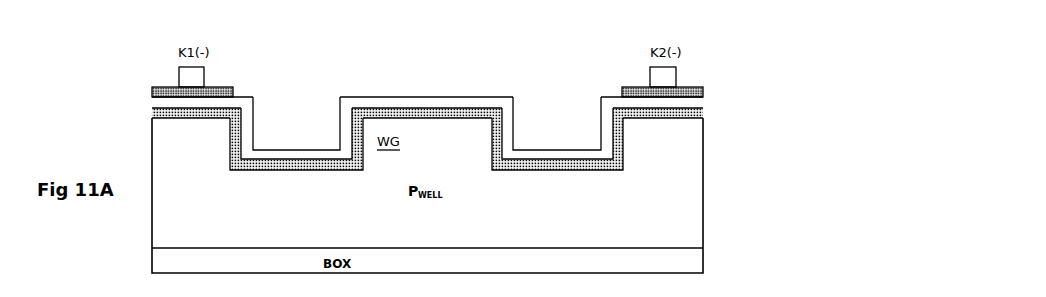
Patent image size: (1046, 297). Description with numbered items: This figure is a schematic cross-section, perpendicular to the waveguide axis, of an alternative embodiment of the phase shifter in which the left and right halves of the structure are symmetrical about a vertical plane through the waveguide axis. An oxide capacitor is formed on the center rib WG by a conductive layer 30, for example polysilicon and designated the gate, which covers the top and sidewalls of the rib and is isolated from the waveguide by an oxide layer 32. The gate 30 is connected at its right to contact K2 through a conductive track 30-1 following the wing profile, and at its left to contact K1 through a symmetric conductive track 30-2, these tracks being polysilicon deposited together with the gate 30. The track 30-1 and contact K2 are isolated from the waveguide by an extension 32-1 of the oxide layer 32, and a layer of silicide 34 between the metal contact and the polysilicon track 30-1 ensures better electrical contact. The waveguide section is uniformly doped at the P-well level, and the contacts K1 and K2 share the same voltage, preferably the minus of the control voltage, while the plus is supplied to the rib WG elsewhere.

The layer of silicide 34 is at (152, 92).
The oxide layer 32 is at (427, 135).
The extension of the oxide layer 32-1 is at (522, 170).
The conductive layer 30 is at (427, 130).
The conductive track 30-1 is at (568, 162).
The symmetric conductive track 30-2 is at (283, 170).